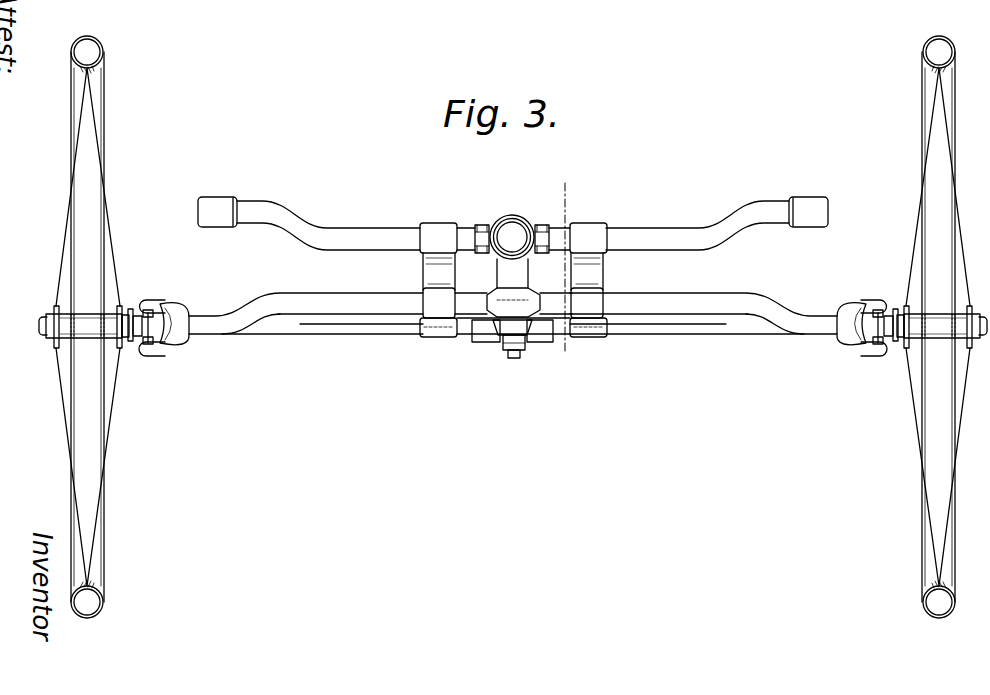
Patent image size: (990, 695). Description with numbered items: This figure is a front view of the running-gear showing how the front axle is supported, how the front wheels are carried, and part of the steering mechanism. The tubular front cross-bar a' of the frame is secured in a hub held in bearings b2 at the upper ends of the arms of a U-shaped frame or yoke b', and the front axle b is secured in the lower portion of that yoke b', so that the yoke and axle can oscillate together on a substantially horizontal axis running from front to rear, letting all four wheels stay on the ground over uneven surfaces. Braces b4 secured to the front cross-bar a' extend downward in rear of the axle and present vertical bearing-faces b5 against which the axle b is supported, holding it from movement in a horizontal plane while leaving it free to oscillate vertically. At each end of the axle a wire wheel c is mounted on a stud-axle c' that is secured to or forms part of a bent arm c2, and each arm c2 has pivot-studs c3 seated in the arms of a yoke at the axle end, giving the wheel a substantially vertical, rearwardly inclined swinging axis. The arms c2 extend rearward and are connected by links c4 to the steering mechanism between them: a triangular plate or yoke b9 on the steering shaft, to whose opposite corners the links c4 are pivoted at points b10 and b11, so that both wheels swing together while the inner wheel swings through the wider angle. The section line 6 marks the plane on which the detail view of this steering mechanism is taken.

The front wheel c is at (513, 327).
The stud-axle c' is at (513, 299).
The bent arm c2 is at (172, 338).
The pivot-studs c3 is at (152, 302).
The links c4 is at (385, 328).
The front cross-bar a' is at (513, 222).
The front axle b is at (513, 301).
The U-shaped frame or yoke b' is at (522, 287).
The bearings b2 is at (517, 216).
The braces b4 is at (420, 275).
The vertical bearing-faces b5 is at (513, 285).
The triangular plate or yoke b9 is at (533, 342).
The pivot point b10 is at (543, 337).
The pivot point b11 is at (478, 342).
The section line 6 6 is at (567, 268).